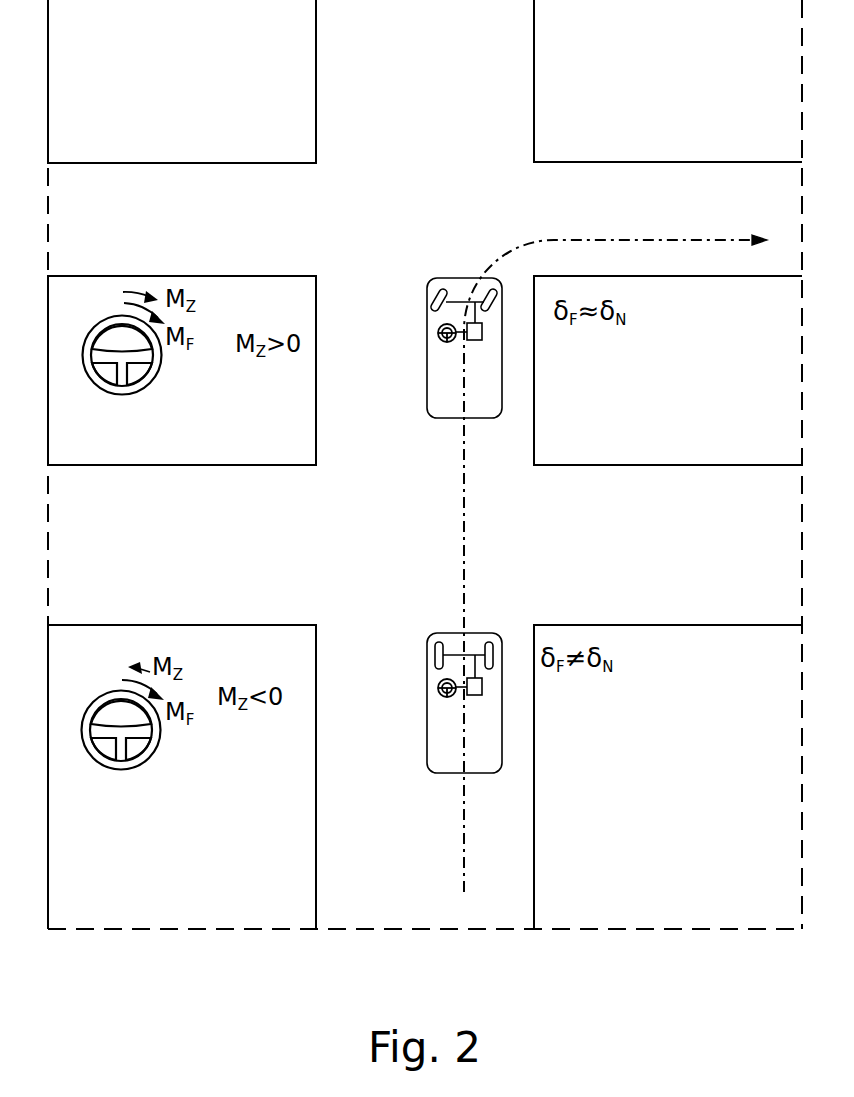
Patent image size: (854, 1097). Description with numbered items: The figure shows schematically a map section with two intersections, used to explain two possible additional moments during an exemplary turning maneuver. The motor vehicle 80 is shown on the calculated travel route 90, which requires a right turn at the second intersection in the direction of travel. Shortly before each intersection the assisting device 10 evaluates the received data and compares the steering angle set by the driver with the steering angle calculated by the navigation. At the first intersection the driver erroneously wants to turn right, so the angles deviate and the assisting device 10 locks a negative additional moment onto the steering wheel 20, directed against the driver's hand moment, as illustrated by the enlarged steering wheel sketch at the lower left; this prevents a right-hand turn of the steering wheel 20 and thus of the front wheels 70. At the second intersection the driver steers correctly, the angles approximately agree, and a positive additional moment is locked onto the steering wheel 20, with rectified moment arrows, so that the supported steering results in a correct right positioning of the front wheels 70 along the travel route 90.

The assisting device 10 is at (481, 342).
The steering wheel 20 is at (446, 344).
The front wheels 70 is at (462, 302).
The motor vehicle 80 is at (442, 418).
The travel route 90 is at (698, 238).